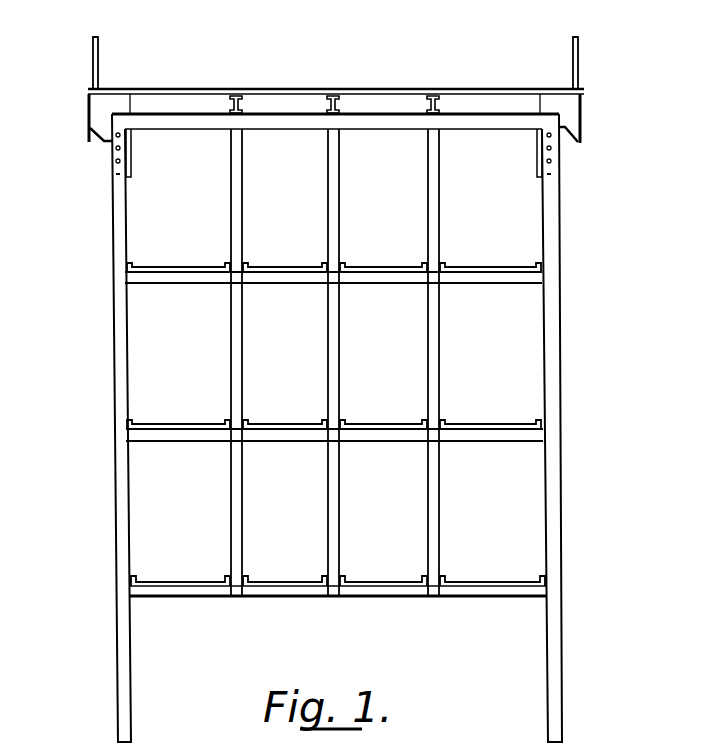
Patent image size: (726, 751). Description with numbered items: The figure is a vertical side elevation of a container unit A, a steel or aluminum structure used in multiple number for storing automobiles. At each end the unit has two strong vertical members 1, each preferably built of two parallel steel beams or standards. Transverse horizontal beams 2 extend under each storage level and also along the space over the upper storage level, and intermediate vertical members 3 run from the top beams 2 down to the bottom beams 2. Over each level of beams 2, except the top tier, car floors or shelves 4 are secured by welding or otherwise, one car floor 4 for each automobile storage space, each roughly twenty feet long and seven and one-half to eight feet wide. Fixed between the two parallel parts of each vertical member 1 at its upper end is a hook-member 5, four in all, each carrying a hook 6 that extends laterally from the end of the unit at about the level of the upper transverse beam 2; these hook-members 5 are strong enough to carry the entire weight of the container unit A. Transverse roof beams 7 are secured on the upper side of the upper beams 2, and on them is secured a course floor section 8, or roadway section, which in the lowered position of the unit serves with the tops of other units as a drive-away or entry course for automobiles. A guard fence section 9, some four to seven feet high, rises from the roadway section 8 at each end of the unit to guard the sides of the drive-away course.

The vertical member 1 is at (114, 376).
The transverse horizontal beam 2 is at (478, 131).
The intermediate vertical member 3 is at (242, 202).
The car floor 4 is at (180, 265).
The hook-member 5 is at (132, 171).
The hook 6 is at (88, 126).
The transverse roof beam 7 is at (243, 103).
The course floor section 8 is at (197, 93).
The fence section 9 is at (92, 65).
The container unit A is at (562, 389).